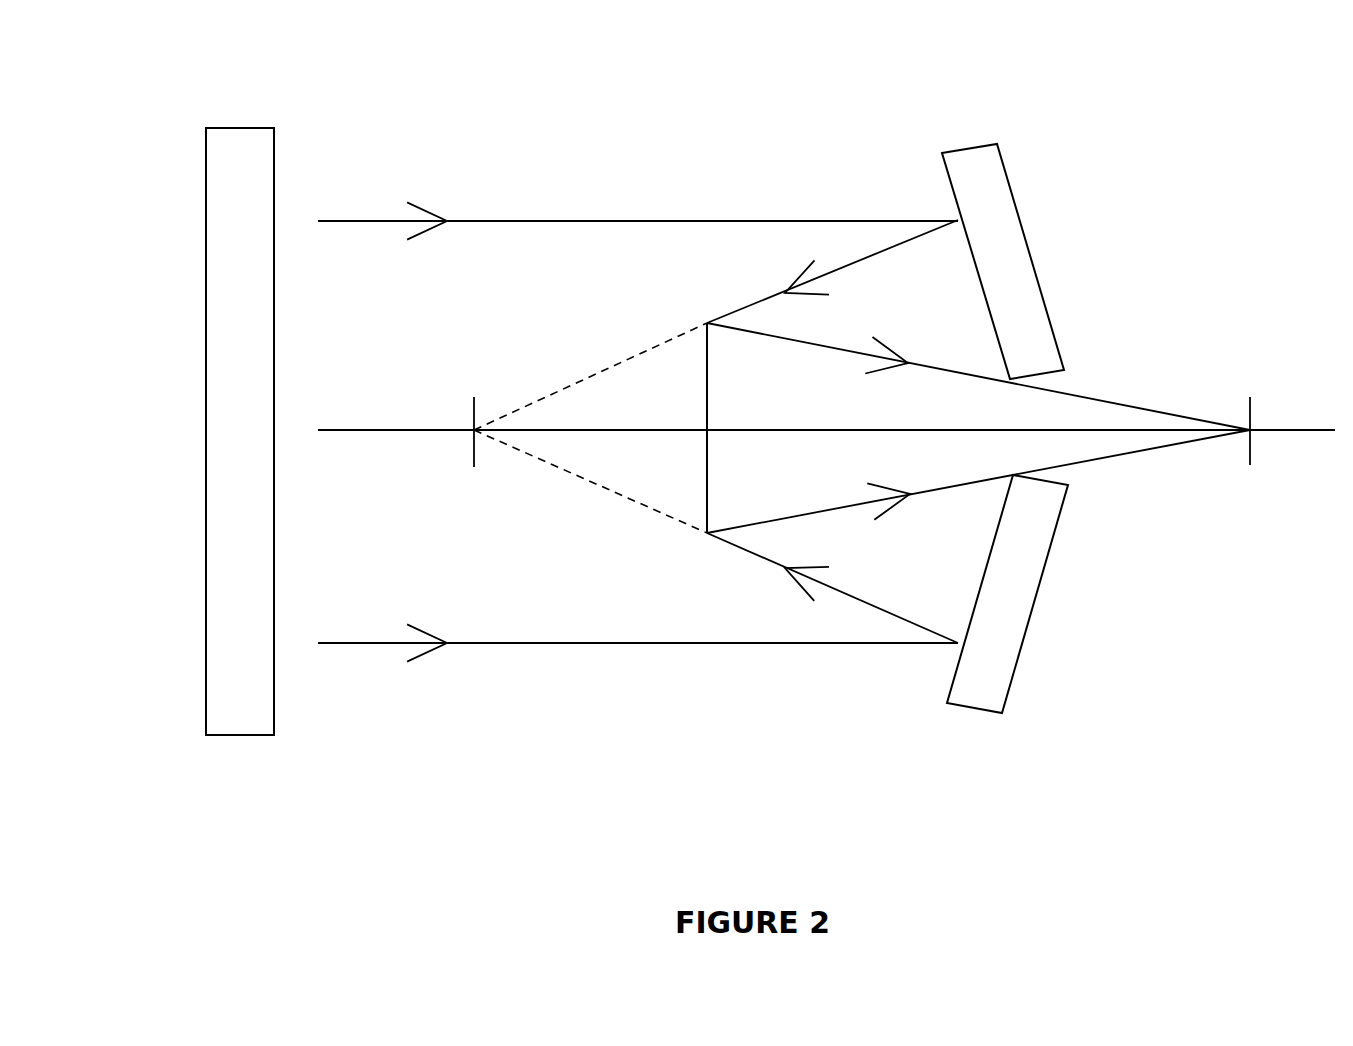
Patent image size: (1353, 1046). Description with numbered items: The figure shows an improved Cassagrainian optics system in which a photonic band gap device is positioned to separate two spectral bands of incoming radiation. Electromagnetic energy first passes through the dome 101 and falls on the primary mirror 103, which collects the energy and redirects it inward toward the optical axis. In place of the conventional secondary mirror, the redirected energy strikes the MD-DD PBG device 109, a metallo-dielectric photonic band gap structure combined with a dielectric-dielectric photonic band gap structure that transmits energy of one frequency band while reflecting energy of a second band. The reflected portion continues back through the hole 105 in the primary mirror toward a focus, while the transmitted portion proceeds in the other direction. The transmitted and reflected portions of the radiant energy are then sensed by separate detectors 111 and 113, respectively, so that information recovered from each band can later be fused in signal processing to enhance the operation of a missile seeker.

The dome 101 is at (243, 128).
The primary mirror 103 is at (1032, 232).
The hole in the primary mirror 105 is at (1080, 418).
The MD-DD PBG device 109 is at (703, 475).
The detector 111 is at (475, 422).
The detector 113 is at (1252, 428).